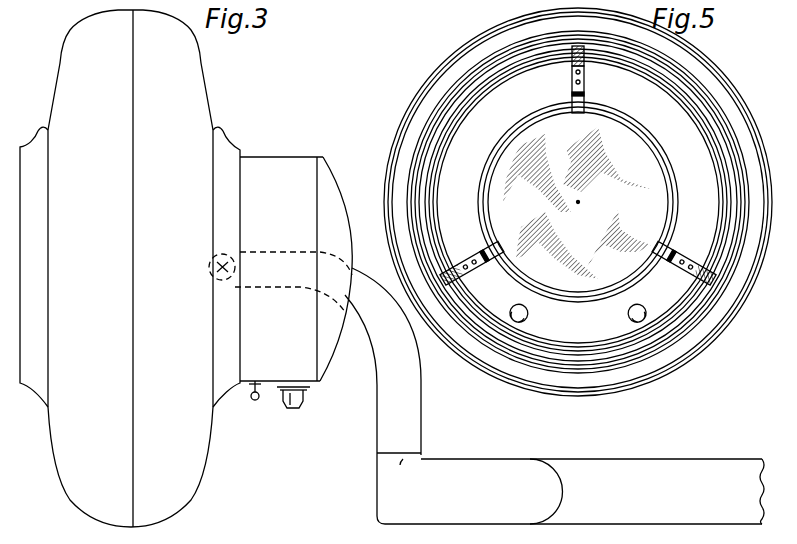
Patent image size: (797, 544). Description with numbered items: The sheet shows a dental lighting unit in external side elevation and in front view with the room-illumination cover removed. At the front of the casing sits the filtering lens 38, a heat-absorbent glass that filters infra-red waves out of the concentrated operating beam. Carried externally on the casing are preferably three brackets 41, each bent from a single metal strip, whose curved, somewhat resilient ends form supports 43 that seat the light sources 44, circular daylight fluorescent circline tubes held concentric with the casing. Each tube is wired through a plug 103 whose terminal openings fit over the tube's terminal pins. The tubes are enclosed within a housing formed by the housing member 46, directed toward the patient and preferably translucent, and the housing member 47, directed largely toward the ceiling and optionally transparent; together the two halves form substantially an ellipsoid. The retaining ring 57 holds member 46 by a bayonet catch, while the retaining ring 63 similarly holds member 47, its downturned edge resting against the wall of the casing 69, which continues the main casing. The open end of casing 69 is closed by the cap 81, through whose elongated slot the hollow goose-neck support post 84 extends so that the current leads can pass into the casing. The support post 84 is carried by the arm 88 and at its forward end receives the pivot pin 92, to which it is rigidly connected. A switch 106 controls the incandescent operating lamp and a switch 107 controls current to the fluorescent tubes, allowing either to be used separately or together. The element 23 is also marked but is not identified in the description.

In FIG. 3, the support arm 23 is at (420, 391).
In FIG. 5, the filtering lens 38 is at (655, 172).
In FIG. 5, the brackets 41 is at (586, 90).
In FIG. 5, the supports 43 is at (571, 62).
In FIG. 5, the light sources 44 is at (509, 76).
In FIG. 3, the housing member 46 is at (56, 91).
In FIG. 3, the housing member 47 is at (203, 91).
In FIG. 5, the housing member 47 is at (704, 358).
In FIG. 3, the retaining ring 57 is at (37, 142).
In FIG. 3, the retaining ring 63 is at (229, 144).
In FIG. 3, the casing 69 is at (277, 164).
In FIG. 3, the cap 81 is at (337, 197).
In FIG. 3, the support post 84 is at (377, 424).
In FIG. 3, the arm 88 is at (470, 514).
In FIG. 3, the pivot pin 92 is at (240, 256).
In FIG. 5, the plug 103 is at (520, 320).
In FIG. 3, the switch 106 is at (253, 401).
In FIG. 3, the switch 107 is at (293, 410).